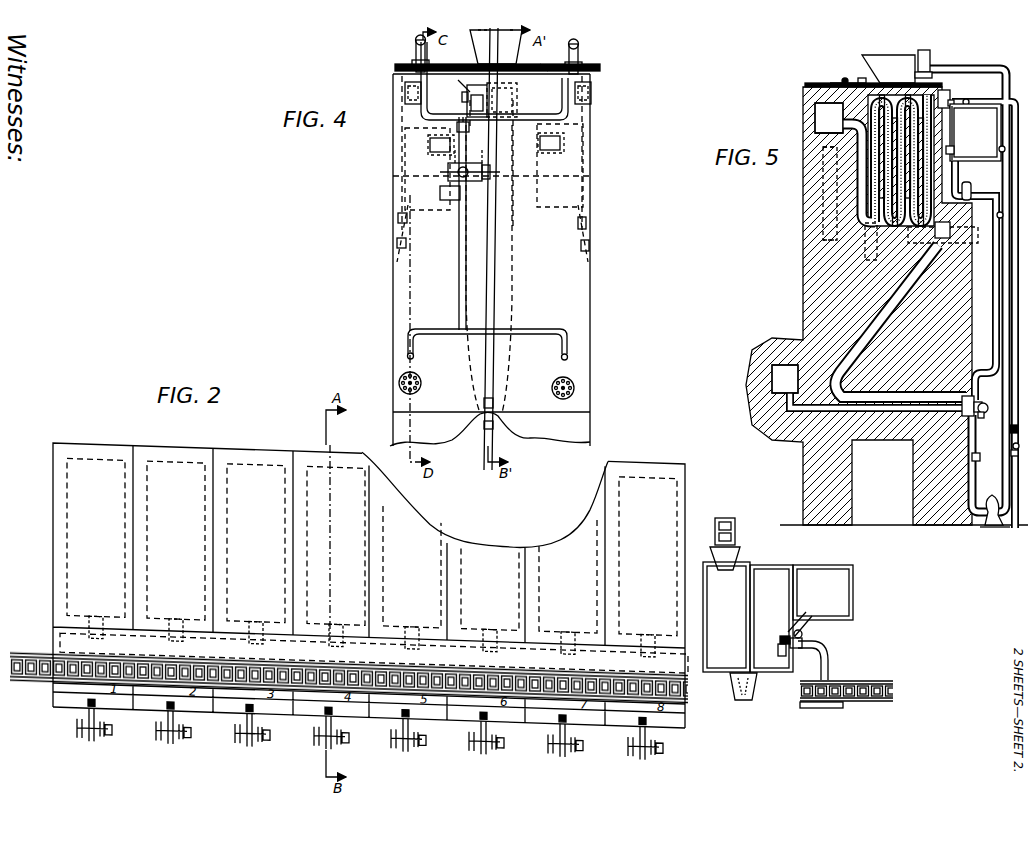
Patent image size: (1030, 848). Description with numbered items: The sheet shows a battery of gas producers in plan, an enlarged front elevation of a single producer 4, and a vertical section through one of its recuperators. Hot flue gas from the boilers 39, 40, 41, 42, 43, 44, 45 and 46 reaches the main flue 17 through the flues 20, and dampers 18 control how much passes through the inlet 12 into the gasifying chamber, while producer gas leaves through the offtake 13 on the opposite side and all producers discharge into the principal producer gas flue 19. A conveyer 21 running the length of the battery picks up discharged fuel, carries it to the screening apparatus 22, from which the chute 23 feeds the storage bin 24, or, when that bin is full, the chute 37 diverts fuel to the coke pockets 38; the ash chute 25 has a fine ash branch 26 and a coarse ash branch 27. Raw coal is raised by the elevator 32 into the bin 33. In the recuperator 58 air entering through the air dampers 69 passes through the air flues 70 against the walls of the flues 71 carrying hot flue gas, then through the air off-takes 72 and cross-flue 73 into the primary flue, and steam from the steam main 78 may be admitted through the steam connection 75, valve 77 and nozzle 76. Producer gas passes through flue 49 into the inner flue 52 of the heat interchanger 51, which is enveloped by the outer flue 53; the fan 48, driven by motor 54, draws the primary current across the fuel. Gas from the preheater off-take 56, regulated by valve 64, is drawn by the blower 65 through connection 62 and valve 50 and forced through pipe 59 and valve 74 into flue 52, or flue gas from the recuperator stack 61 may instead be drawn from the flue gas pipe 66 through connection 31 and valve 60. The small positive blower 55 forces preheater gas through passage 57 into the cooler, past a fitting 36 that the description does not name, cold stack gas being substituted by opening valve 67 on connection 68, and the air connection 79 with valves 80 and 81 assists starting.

In FIG. 4, the producer 4 is at (475, 270).
In FIG. 4, the inlet for the primary current 12 is at (479, 153).
In FIG. 5, the offtake for the producer gas 13 is at (950, 226).
In FIG. 4, the main flue 17 is at (502, 100).
In FIG. 5, the main flue 17 is at (829, 117).
In FIG. 5, the damper 18 is at (816, 115).
In FIG. 5, the principal producer gas flue 19 is at (785, 379).
In FIG. 4, the flue 20 is at (505, 101).
In FIG. 2, the flue 20 is at (95, 618).
In FIG. 2, the conveyer 21 is at (40, 660).
In FIG. 2, the screening apparatus 22 is at (813, 660).
In FIG. 2, the chute for the screened material 23 is at (779, 653).
In FIG. 2, the storage bin 24 is at (771, 618).
In FIG. 2, the ash chute 25 is at (803, 629).
In FIG. 2, the fine ash chute 26 is at (780, 639).
In FIG. 2, the coarse ash chute 27 is at (803, 644).
In FIG. 4, the connection 31 is at (452, 155).
In FIG. 5, the connection 31 is at (1008, 261).
In FIG. 2, the elevator 32 is at (728, 518).
In FIG. 2, the bin 33 is at (730, 631).
In FIG. 5, the fitting 36 is at (981, 459).
In FIG. 2, the chute 37 is at (806, 618).
In FIG. 2, the coke pockets 38 is at (823, 592).
In FIG. 2, the boiler 39 is at (96, 537).
In FIG. 2, the boiler 40 is at (176, 540).
In FIG. 2, the boiler 41 is at (256, 543).
In FIG. 2, the boiler 42 is at (336, 545).
In FIG. 2, the boiler 43 is at (412, 567).
In FIG. 2, the boiler 44 is at (490, 590).
In FIG. 2, the boiler 45 is at (568, 574).
In FIG. 2, the boiler 46 is at (648, 556).
In FIG. 5, the fan 48 is at (984, 416).
In FIG. 5, the flue 49 is at (890, 310).
In FIG. 5, the valve 50 is at (955, 151).
In FIG. 5, the heat interchanger 51 is at (905, 432).
In FIG. 5, the inner flue 52 is at (979, 401).
In FIG. 5, the outer flue 53 is at (975, 393).
In FIG. 4, the motor 54 is at (398, 385).
In FIG. 5, the motor 54 is at (988, 407).
In FIG. 5, the blower 55 is at (992, 529).
In FIG. 2, the blower 55 is at (248, 737).
In FIG. 4, the off-take 56 is at (503, 82).
In FIG. 5, the off-take 56 is at (952, 100).
In FIG. 2, the off-take 56 is at (167, 711).
In FIG. 5, the passage 57 is at (977, 480).
In FIG. 5, the recuperator 58 is at (975, 132).
In FIG. 4, the pipe 59 is at (462, 255).
In FIG. 5, the pipe 59 is at (992, 280).
In FIG. 4, the valve 60 is at (458, 126).
In FIG. 5, the valve 60 is at (1002, 146).
In FIG. 4, the recuperator stack 61 is at (414, 45).
In FIG. 5, the recuperator stack 61 is at (931, 57).
In FIG. 4, the connection 62 is at (467, 109).
In FIG. 5, the connection 62 is at (957, 110).
In FIG. 5, the valve 64 is at (969, 102).
In FIG. 4, the blower 65 is at (448, 169).
In FIG. 5, the blower 65 is at (971, 188).
In FIG. 4, the flue gas pipe 66 is at (423, 78).
In FIG. 5, the flue gas pipe 66 is at (1009, 84).
In FIG. 4, the valve 67 is at (463, 95).
In FIG. 4, the connection 68 is at (455, 82).
In FIG. 4, the air damper 69 is at (405, 88).
In FIG. 5, the air damper 69 is at (942, 95).
In FIG. 5, the air flue 70 is at (862, 80).
In FIG. 5, the flue 71 is at (843, 79).
In FIG. 4, the air off-take 72 is at (435, 152).
In FIG. 5, the air off-take 72 is at (838, 191).
In FIG. 4, the cross-flue 73 is at (440, 192).
In FIG. 5, the cross-flue 73 is at (838, 229).
In FIG. 5, the valve 74 is at (985, 360).
In FIG. 4, the steam connection 75 is at (450, 192).
In FIG. 5, the steam connection 75 is at (868, 74).
In FIG. 5, the nozzle 76 is at (999, 212).
In FIG. 5, the valve 77 is at (848, 74).
In FIG. 4, the steam main 78 is at (547, 60).
In FIG. 5, the steam main 78 is at (840, 80).
In FIG. 4, the air connection 79 is at (485, 428).
In FIG. 5, the air connection 79 is at (1013, 446).
In FIG. 5, the valve 80 is at (1012, 456).
In FIG. 4, the valve 81 is at (495, 403).
In FIG. 5, the valve 81 is at (1009, 430).